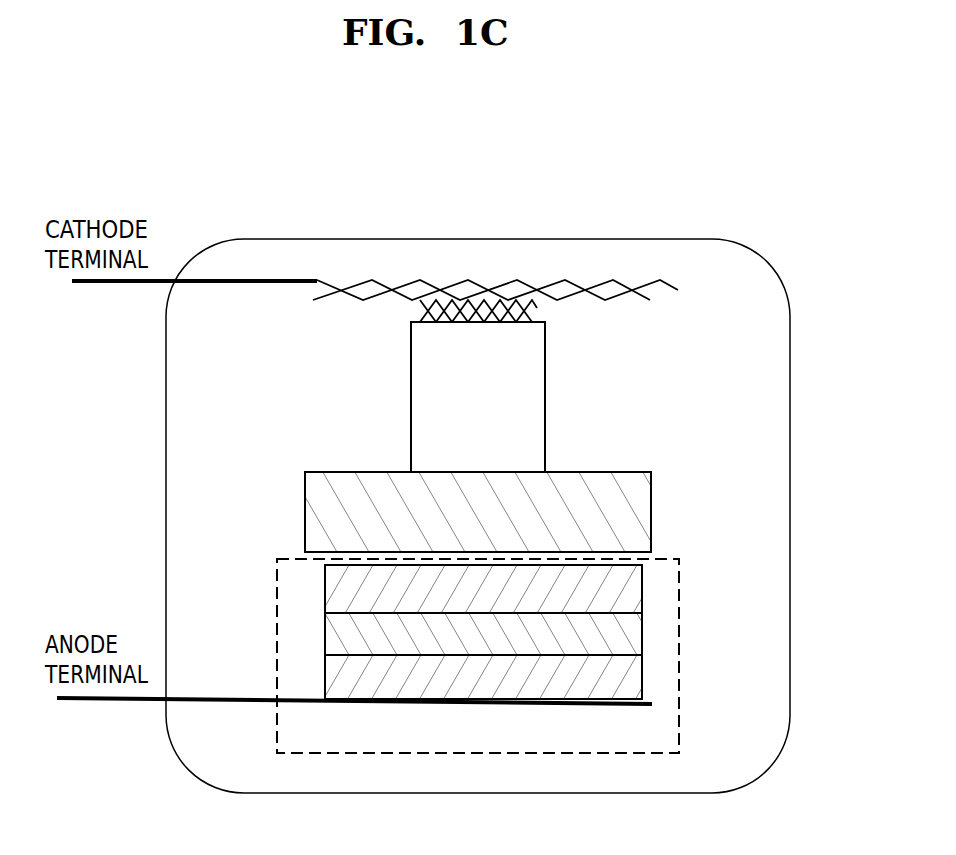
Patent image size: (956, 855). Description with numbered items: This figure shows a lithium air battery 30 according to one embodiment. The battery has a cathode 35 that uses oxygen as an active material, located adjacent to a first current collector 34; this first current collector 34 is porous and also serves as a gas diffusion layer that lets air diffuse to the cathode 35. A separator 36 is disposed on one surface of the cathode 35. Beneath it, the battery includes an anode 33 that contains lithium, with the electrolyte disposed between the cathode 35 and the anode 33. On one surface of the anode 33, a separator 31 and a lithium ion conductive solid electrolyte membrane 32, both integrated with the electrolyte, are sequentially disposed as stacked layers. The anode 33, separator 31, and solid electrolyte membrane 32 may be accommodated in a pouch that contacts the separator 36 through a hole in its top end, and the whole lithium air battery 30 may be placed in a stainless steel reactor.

The lithium air battery 30 is at (733, 220).
The separator 31 is at (483, 634).
The lithium ion conductive solid electrolyte membrane 32 is at (483, 659).
The anode 33 is at (496, 655).
The first current collector 34 is at (495, 281).
The cathode 35 is at (558, 322).
The separator 36 is at (478, 512).